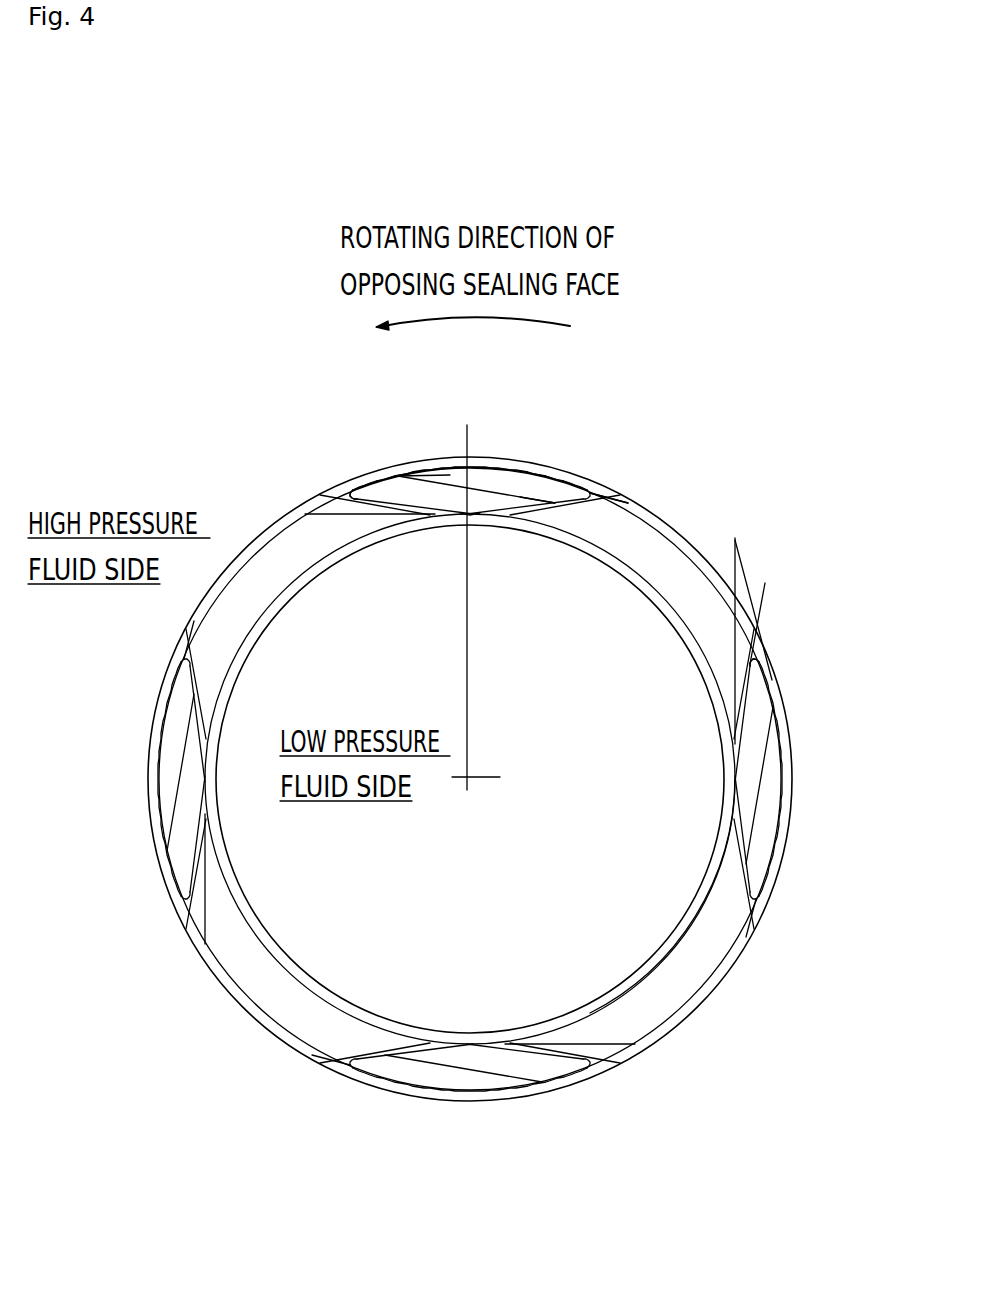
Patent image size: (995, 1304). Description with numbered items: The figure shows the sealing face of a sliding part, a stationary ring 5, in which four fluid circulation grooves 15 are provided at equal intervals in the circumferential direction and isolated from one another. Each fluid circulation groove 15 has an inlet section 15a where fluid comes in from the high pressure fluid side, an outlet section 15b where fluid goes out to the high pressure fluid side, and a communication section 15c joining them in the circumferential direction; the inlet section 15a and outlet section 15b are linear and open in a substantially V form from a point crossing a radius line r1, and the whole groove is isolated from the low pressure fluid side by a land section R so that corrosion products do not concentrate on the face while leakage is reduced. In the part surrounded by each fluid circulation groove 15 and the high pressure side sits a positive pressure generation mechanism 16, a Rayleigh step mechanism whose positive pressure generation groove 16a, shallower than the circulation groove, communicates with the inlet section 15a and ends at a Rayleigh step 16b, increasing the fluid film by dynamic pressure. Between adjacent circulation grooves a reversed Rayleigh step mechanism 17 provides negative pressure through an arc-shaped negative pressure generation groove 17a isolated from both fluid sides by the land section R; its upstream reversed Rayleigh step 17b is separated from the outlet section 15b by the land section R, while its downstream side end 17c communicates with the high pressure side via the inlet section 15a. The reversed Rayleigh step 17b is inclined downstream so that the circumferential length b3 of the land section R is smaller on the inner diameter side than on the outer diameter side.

The stationary ring 5 is at (289, 505).
The fluid circulation groove 15 is at (500, 500).
The inlet section 15a is at (565, 497).
The outlet section 15b is at (378, 481).
The communication section 15c is at (472, 517).
The positive pressure generation mechanism 16 is at (521, 468).
The positive pressure generation groove 16a is at (546, 488).
The Rayleigh step 16b is at (452, 476).
The reversed Rayleigh step mechanism 17 is at (673, 528).
The negative pressure generation groove 17a is at (690, 603).
The reversed Rayleigh step 17b is at (700, 668).
The downstream side end 17c is at (602, 497).
The land section R is at (375, 483).
The radius line r1 is at (472, 585).
The circumferential length b3 is at (765, 584).